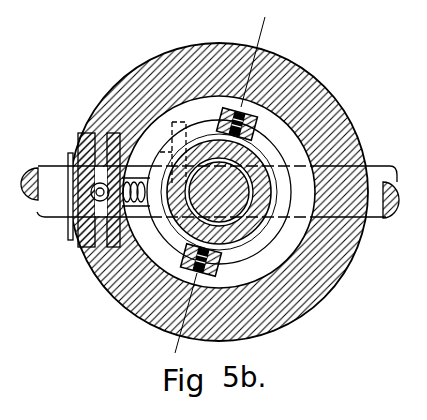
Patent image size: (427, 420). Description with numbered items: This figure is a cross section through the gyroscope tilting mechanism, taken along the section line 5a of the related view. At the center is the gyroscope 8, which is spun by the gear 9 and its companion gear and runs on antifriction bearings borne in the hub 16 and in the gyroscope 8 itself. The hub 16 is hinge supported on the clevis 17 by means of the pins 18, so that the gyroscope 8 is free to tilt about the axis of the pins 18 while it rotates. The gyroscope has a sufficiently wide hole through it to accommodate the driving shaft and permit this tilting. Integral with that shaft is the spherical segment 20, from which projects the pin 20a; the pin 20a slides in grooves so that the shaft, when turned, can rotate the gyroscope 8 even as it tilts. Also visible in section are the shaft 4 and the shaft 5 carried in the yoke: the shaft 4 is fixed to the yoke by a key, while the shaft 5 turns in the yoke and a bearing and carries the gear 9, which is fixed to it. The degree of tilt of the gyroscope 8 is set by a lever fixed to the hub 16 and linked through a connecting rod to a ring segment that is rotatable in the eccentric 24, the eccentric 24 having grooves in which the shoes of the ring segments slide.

The shaft 4 is at (47, 218).
The shaft 5 is at (400, 218).
The section line 5a is at (219, 183).
The gyroscope 8 is at (351, 126).
The gear 9 is at (178, 121).
The hub 16 is at (272, 229).
The clevis 17 is at (226, 267).
The pins 18 is at (252, 108).
The spherical segment 20 is at (219, 192).
The pin 20a is at (258, 196).
The eccentric 24 is at (76, 256).